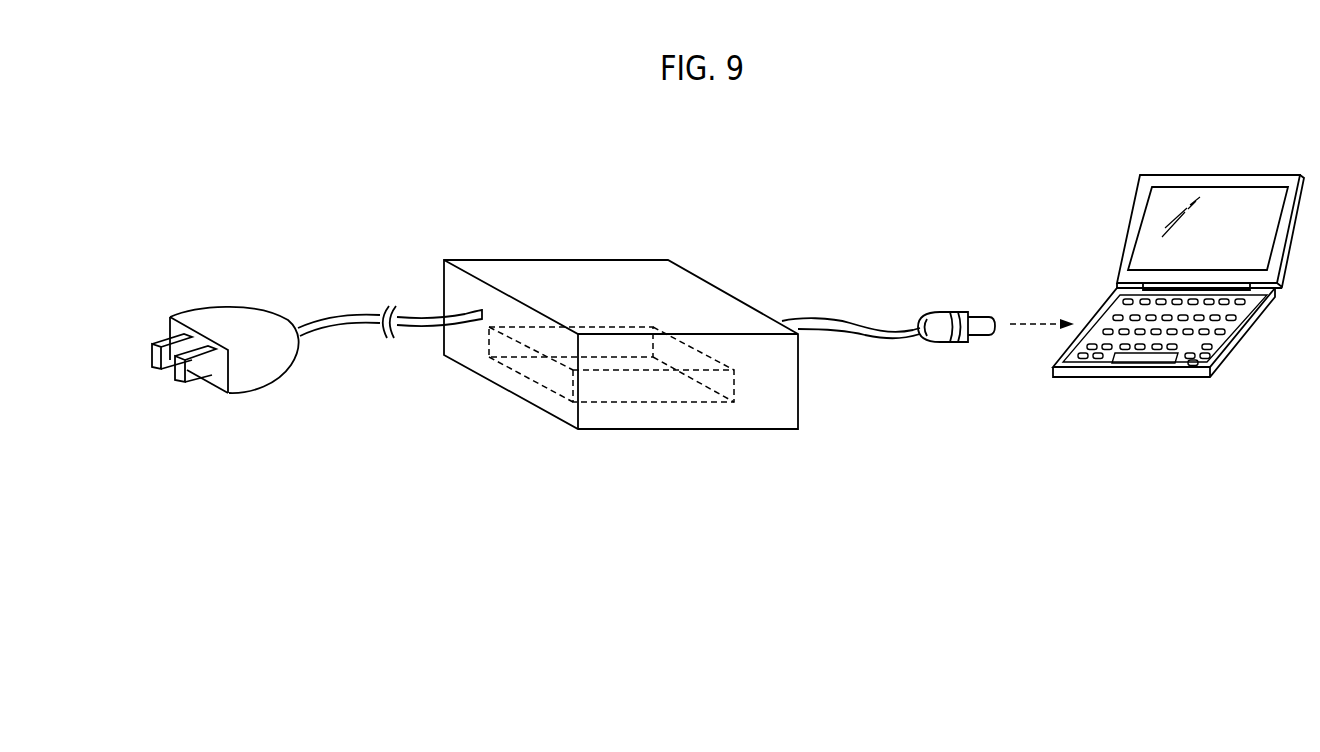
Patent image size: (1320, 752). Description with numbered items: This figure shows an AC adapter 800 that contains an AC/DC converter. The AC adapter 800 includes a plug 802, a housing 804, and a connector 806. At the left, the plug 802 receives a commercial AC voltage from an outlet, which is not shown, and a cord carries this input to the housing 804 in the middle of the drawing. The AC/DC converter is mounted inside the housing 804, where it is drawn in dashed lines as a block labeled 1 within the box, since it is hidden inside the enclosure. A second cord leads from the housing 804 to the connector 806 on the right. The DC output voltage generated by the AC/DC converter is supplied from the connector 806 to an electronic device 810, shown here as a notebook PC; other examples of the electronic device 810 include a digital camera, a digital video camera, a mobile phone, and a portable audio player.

The AC adapter 800 is at (742, 619).
The plug 802 is at (234, 312).
The housing 804 is at (544, 258).
The power conversion circuit 1 is at (643, 385).
The connector 806 is at (943, 311).
The electronic device 810 is at (1232, 173).